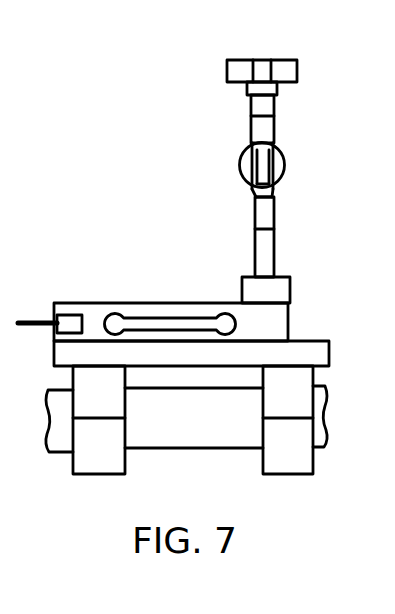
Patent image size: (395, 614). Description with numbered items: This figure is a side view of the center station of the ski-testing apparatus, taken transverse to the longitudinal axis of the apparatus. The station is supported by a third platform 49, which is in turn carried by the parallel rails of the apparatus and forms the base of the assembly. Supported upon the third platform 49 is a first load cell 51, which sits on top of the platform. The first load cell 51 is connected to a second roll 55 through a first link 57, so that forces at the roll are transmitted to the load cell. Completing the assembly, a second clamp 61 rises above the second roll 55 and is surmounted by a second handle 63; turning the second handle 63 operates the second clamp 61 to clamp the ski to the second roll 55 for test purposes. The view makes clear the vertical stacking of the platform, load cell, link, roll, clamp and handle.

The third platform 49 is at (193, 376).
The first load cell 51 is at (303, 271).
The second roll 55 is at (306, 153).
The first link 57 is at (294, 233).
The second clamp 61 is at (309, 108).
The second handle 63 is at (282, 47).